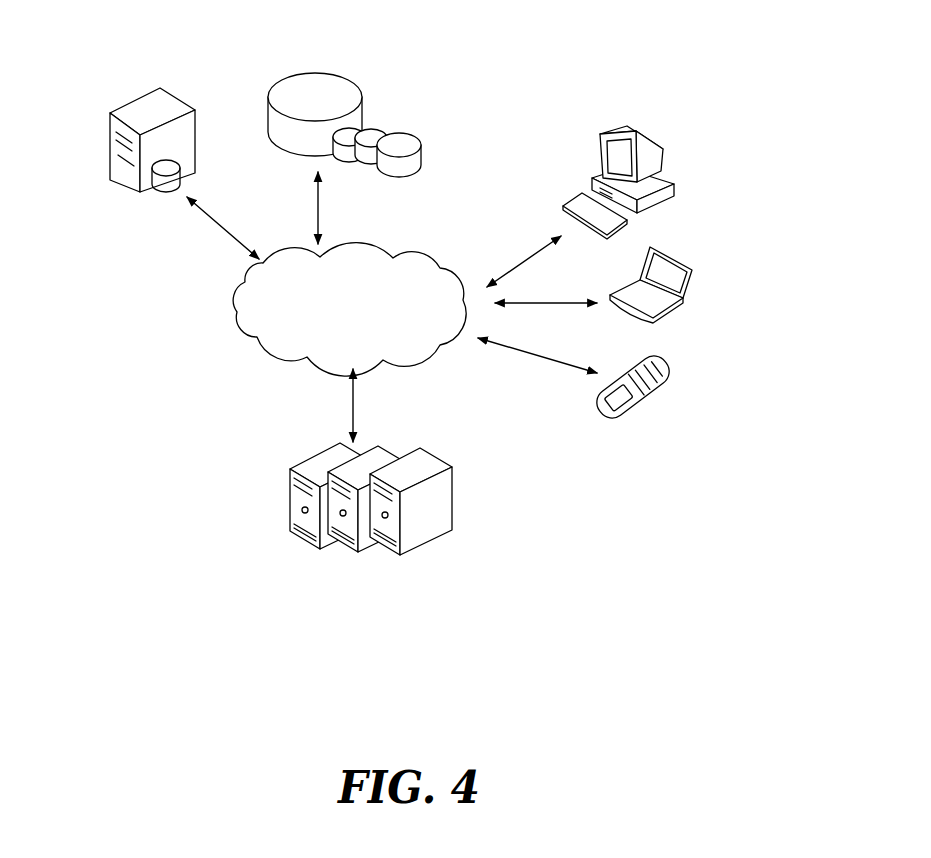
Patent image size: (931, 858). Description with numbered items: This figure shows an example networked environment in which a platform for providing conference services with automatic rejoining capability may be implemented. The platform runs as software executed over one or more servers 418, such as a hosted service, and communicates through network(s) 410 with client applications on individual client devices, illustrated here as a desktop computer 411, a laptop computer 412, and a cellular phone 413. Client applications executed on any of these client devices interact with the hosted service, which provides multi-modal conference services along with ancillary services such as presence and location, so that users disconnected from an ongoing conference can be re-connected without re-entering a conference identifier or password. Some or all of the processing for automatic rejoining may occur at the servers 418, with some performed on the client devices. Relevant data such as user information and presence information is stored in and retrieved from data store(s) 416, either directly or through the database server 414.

The network(s) 410 is at (363, 230).
The desktop computer 411 is at (660, 122).
The laptop computer 412 is at (695, 242).
The cellular phone 413 is at (669, 352).
The database server 414 is at (155, 208).
The data store(s) 416 is at (332, 45).
The servers 418 is at (318, 444).